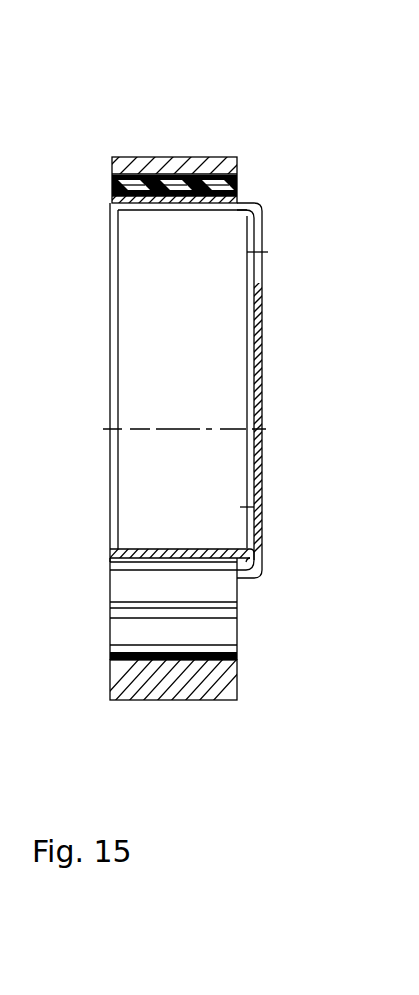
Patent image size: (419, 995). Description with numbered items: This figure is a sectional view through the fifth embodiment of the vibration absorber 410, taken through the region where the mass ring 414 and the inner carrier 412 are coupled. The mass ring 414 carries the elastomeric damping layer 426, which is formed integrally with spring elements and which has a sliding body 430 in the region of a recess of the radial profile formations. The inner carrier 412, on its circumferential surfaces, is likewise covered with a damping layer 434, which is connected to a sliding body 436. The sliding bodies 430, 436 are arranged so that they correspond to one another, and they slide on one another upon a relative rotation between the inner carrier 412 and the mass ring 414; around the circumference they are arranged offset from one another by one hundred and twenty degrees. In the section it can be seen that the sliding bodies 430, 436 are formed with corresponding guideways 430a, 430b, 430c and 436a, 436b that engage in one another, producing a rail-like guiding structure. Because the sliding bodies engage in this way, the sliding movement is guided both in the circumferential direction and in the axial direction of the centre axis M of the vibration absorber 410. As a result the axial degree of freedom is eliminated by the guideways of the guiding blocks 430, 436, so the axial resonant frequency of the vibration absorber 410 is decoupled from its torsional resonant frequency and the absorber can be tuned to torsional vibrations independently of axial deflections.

The vibration absorber 410 is at (328, 128).
The inner carrier 412 is at (260, 320).
The mass ring 414 is at (212, 680).
The elastomeric damping layer 426 is at (237, 657).
The sliding body 430 is at (238, 190).
The guideway 430a is at (130, 176).
The guideway 430b is at (186, 176).
The guideway 430c is at (232, 176).
The damping layer 434 is at (240, 570).
The sliding body 436 is at (113, 200).
The guideway 436a is at (137, 203).
The guideway 436b is at (248, 218).
The centre axis M is at (265, 432).